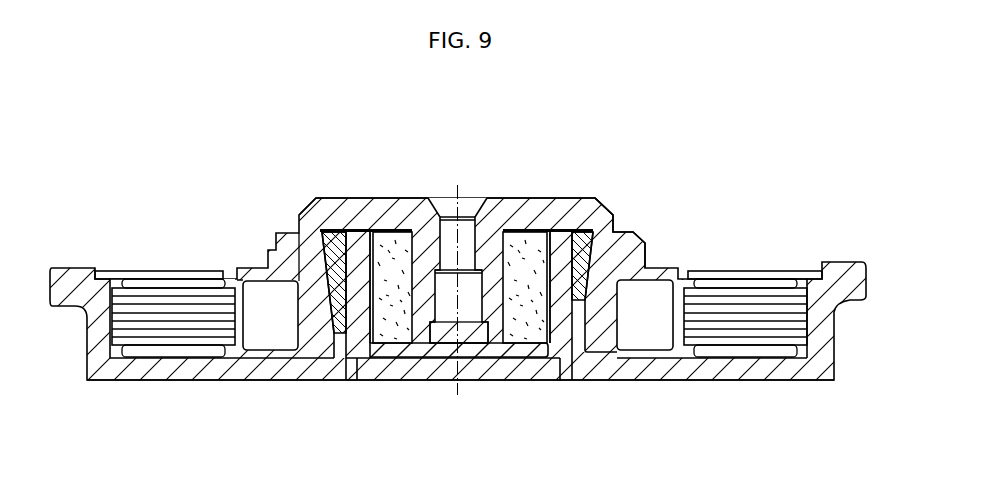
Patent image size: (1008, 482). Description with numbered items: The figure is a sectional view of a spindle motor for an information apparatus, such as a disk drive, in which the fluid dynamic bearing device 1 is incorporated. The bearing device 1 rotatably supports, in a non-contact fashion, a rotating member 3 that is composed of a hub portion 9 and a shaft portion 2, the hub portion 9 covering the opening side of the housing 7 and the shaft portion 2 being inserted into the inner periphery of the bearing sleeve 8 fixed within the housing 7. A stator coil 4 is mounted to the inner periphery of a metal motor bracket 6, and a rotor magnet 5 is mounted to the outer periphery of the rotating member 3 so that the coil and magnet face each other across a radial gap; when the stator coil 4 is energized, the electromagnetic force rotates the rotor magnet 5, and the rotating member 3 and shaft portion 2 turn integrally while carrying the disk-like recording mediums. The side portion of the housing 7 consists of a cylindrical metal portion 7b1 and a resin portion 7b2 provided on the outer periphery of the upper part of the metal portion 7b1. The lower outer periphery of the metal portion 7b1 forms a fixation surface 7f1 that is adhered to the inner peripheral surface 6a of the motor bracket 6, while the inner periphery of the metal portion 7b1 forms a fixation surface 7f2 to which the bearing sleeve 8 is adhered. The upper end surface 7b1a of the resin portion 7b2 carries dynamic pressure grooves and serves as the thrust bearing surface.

The fluid dynamic bearing device 1 is at (550, 178).
The shaft portion 2 is at (494, 276).
The rotating member 3 is at (366, 192).
The stator coil 4 is at (784, 282).
The rotor magnet 5 is at (652, 296).
The motor bracket 6 is at (173, 375).
The inner peripheral surface 6a is at (352, 360).
The housing 7 is at (510, 388).
The metal portion 7b1 is at (345, 333).
The upper end surface 7b1a is at (342, 229).
The resin portion 7b2 is at (324, 231).
The fixation surface 7f1 is at (351, 345).
The fixation surface 7f2 is at (392, 229).
The bearing sleeve 8 is at (533, 323).
The hub portion 9 is at (579, 196).